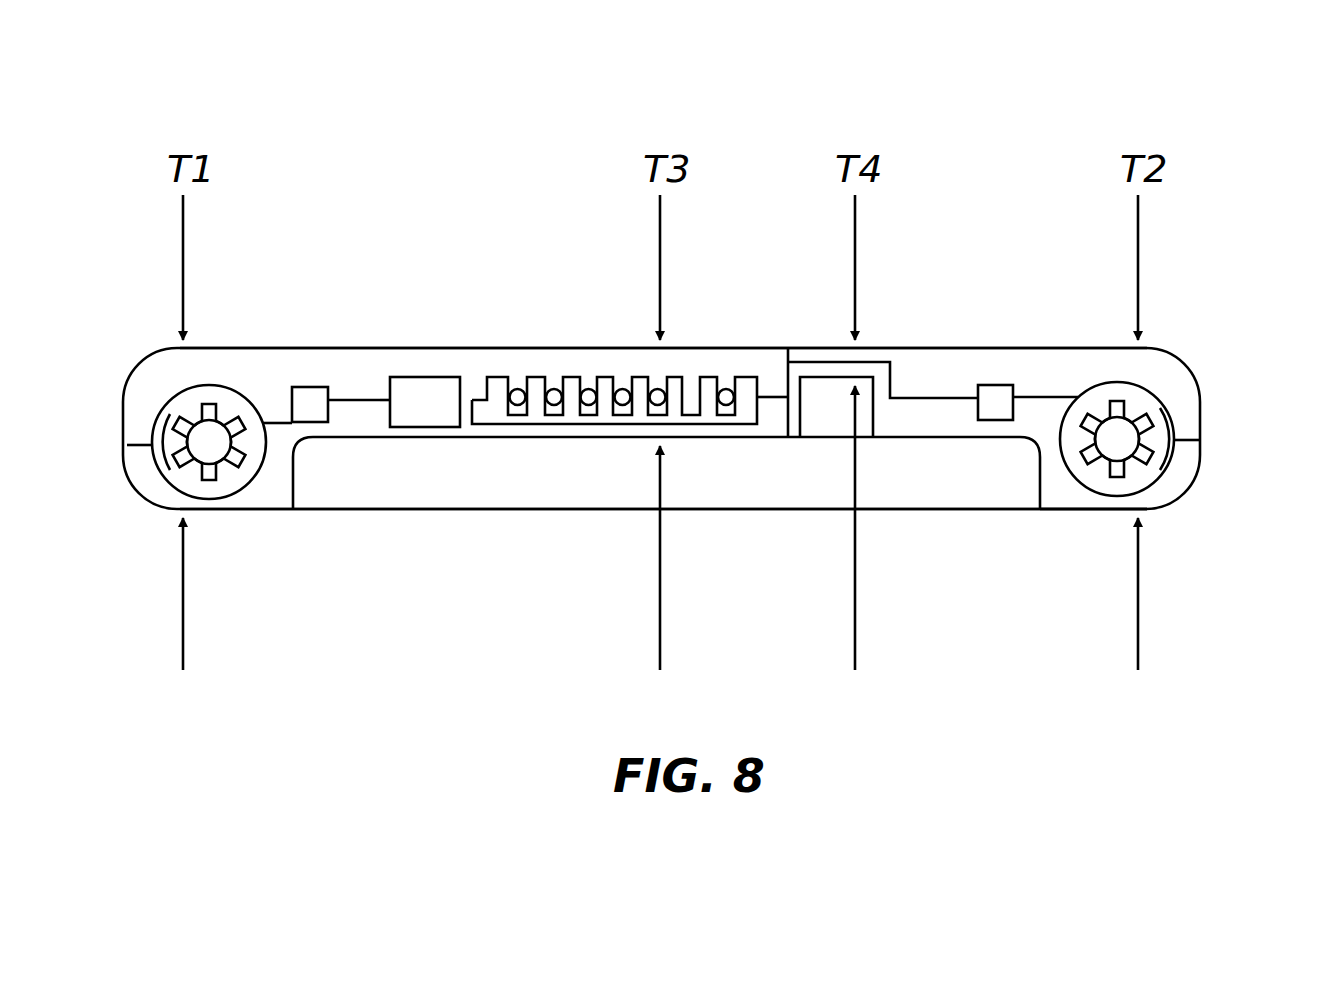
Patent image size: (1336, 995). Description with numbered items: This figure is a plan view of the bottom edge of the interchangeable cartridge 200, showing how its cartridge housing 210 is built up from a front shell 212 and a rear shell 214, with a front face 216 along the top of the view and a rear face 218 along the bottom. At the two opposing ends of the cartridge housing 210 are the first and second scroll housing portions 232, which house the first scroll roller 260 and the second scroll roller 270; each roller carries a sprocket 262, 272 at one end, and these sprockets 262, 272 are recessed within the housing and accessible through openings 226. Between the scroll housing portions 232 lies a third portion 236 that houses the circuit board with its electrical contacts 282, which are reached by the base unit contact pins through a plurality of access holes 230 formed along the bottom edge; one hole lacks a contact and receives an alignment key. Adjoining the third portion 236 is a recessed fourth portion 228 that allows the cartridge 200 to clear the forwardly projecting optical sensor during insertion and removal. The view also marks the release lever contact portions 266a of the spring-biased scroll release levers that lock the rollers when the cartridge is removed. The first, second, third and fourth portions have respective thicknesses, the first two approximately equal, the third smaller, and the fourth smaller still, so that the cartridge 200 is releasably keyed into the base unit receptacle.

The cartridge 200 is at (978, 78).
The cartridge housing 210 is at (1200, 408).
The front shell 212 is at (1052, 347).
The rear shell 214 is at (1095, 512).
The front face 216 is at (817, 347).
The rear face 218 is at (905, 513).
The openings 226 is at (208, 500).
The recessed fourth portion 228 is at (830, 423).
The access holes 230 is at (760, 273).
The scroll housing portions 232 is at (137, 377).
The third portion 236 is at (570, 360).
The first scroll roller 260 is at (192, 445).
The sprocket 262 is at (178, 455).
The release lever contact portion 266a is at (305, 387).
The second scroll roller 270 is at (1100, 440).
The sprocket 272 is at (1167, 460).
The electrical contacts 282 is at (553, 383).